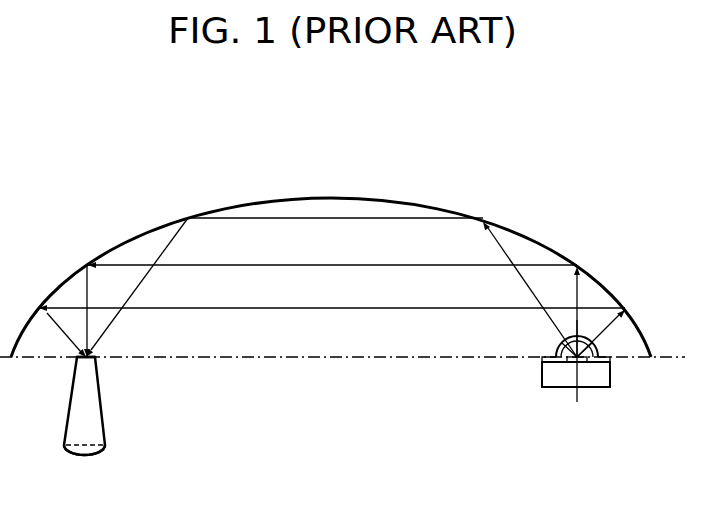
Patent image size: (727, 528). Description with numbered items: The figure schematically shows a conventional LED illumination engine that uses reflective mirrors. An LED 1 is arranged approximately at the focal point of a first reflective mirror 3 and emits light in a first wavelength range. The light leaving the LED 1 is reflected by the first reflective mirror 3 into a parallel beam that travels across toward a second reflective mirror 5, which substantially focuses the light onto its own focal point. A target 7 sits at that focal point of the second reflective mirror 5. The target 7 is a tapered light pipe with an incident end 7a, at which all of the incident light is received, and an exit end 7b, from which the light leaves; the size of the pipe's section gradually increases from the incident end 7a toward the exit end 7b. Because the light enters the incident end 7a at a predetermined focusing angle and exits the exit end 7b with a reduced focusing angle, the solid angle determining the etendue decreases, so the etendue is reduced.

The LED 1 is at (560, 348).
The first reflective mirror 3 is at (598, 277).
The second reflective mirror 5 is at (72, 272).
The target 7 is at (100, 425).
The incident end 7a is at (90, 355).
The exit end 7b is at (97, 452).